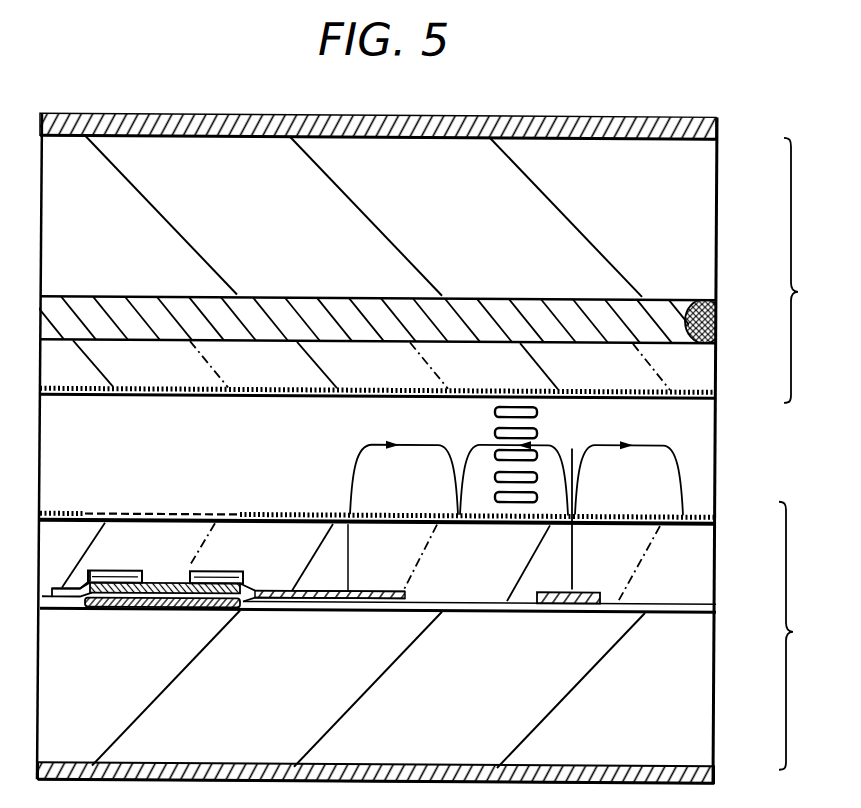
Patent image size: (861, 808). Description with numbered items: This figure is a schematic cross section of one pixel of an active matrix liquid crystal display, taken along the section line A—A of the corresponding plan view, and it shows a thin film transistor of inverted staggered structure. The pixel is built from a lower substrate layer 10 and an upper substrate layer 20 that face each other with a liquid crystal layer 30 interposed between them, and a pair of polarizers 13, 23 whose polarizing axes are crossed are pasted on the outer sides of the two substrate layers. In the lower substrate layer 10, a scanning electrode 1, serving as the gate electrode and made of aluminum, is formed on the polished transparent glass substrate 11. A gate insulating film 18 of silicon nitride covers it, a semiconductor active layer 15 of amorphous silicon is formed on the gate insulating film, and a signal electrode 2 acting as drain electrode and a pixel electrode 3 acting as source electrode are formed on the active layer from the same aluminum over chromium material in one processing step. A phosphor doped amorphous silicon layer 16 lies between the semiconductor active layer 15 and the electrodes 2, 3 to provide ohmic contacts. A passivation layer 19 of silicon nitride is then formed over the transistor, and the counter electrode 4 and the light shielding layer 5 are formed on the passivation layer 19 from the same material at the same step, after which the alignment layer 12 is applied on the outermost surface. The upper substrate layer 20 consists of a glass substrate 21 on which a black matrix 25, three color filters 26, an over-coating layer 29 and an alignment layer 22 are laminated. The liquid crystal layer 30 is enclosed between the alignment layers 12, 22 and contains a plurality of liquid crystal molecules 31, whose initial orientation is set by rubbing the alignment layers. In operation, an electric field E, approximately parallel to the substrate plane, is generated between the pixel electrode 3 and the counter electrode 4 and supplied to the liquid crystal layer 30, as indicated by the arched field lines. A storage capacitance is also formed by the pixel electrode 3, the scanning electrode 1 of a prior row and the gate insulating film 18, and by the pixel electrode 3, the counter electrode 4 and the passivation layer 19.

The scanning electrode 1 is at (167, 609).
The signal electrode 2 is at (128, 570).
The pixel electrode 3 is at (232, 570).
The counter electrode 4 is at (460, 524).
The light shielding layer 5 is at (173, 513).
The lower substrate layer 10 is at (807, 636).
The glass substrate 11 is at (718, 676).
The alignment layer 12 is at (718, 513).
The polarizer 13 is at (718, 778).
The semiconductor active layer 15 is at (167, 582).
The phosphor doped amorphous silicon layer 16 is at (78, 587).
The gate insulating film 18 is at (718, 603).
The passivation layer 19 is at (718, 561).
The upper substrate layer 20 is at (811, 270).
The glass substrate 21 is at (717, 218).
The alignment layer 22 is at (718, 393).
The polarizer 23 is at (717, 127).
The black matrix 25 is at (718, 294).
The color filters 26 is at (718, 334).
The over-coating layer 29 is at (718, 368).
The liquid crystal layer 30 is at (718, 443).
The liquid crystal molecules 31 is at (538, 429).
The electric field E is at (560, 447).
The A—A line A is at (375, 469).